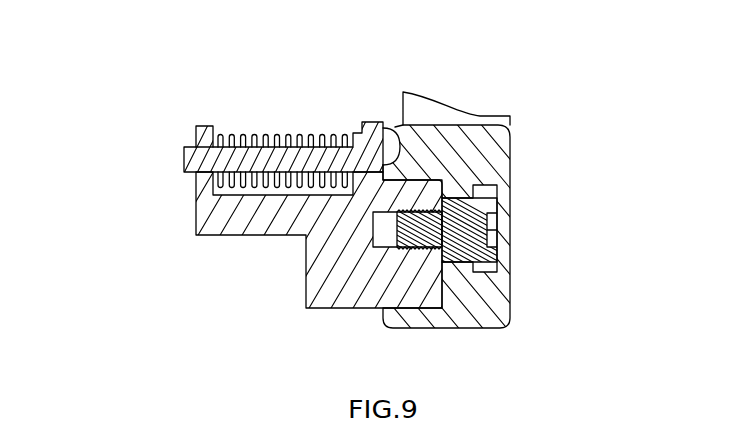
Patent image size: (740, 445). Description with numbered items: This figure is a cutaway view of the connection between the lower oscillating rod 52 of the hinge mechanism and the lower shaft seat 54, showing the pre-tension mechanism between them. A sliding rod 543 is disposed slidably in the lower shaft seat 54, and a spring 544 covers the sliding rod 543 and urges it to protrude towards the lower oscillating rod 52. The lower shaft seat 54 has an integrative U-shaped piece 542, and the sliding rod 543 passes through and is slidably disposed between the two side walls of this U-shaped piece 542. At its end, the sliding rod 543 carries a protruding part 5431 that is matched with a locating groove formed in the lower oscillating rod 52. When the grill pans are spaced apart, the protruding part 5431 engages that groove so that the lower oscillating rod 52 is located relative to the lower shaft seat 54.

The lower oscillating rod 52 is at (512, 146).
The lower shaft seat 54 is at (317, 292).
The U-shaped piece 542 is at (197, 190).
The sliding rod 543 is at (188, 153).
The protruding part 5431 is at (393, 135).
The spring 544 is at (240, 134).